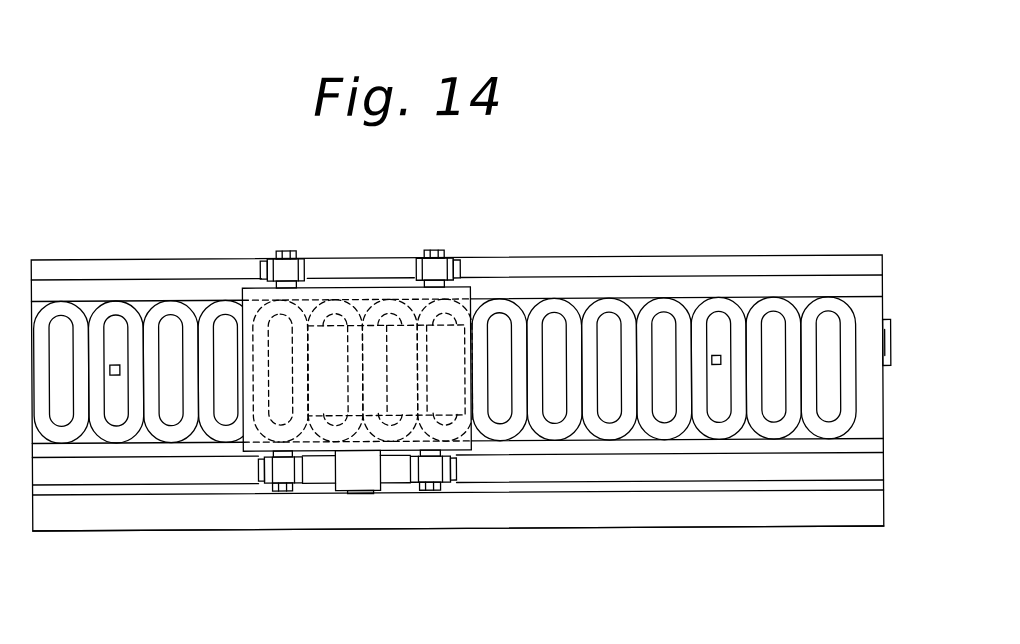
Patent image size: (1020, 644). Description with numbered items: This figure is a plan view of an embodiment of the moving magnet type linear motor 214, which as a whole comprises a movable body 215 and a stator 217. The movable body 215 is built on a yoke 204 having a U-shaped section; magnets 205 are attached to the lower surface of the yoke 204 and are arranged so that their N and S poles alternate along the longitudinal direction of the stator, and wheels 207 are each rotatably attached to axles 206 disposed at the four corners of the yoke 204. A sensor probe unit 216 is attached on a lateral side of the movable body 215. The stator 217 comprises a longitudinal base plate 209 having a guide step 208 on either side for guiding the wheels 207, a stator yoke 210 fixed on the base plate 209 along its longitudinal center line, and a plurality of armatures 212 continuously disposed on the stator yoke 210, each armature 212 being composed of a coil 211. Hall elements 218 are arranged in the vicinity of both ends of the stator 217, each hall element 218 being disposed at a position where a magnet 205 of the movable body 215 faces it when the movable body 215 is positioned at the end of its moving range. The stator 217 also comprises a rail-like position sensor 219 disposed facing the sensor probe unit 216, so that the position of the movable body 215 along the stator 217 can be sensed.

The yoke 204 is at (462, 286).
The magnets 205 is at (457, 363).
The axles 206 is at (285, 252).
The wheels 207 is at (266, 263).
The guide step 208 is at (568, 258).
The base plate 209 is at (70, 290).
The stator yoke 210 is at (863, 307).
The coil 211 is at (667, 430).
The armatures 212 is at (660, 297).
The moving magnet type linear motor 214 is at (770, 230).
The movable body 215 is at (355, 263).
The sensor probe unit 216 is at (373, 468).
The stator 217 is at (145, 250).
The hall elements 218 is at (117, 373).
The position sensor 219 is at (355, 536).